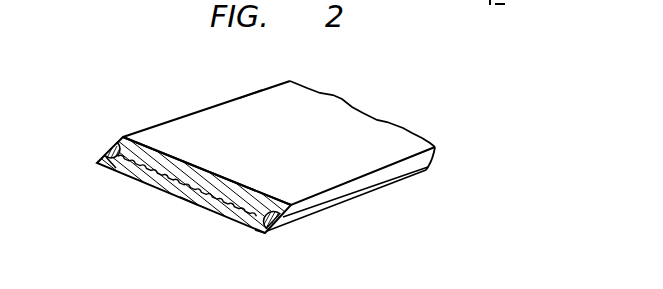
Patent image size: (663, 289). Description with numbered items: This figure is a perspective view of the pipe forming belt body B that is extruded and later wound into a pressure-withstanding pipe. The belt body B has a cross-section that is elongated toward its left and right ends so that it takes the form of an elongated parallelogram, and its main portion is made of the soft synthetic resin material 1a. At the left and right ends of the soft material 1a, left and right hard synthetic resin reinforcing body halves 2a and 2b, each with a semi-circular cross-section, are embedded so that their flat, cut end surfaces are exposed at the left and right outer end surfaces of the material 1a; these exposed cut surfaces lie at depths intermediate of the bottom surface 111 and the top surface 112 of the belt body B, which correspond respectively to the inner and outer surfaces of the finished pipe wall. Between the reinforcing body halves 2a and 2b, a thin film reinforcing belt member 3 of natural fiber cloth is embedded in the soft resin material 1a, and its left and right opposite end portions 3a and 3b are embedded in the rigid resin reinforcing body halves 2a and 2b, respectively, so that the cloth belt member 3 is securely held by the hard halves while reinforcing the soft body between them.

The soft synthetic resin material 1a is at (216, 108).
The belt body B is at (253, 92).
The left hard synthetic resin reinforcing body half 2a is at (105, 146).
The right hard synthetic resin reinforcing body half 2b is at (280, 225).
The thin film reinforcing belt member 3 is at (160, 186).
The left end portion of the belt member 3a is at (118, 168).
The right end portion of the belt member 3b is at (262, 234).
The bottom surface of the belt body 111 is at (198, 206).
The top surface of the belt body 112 is at (240, 184).